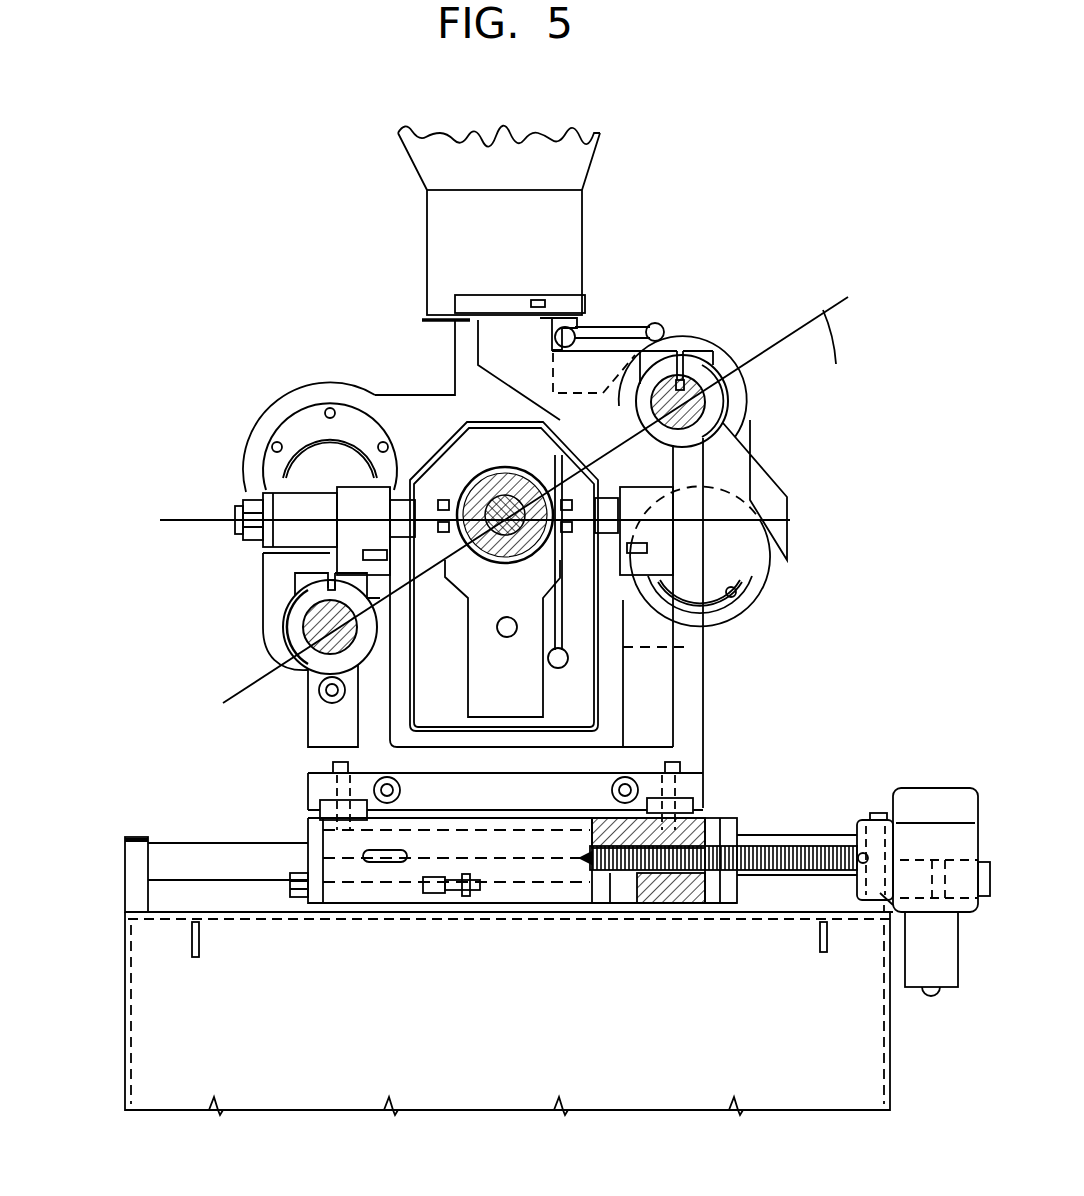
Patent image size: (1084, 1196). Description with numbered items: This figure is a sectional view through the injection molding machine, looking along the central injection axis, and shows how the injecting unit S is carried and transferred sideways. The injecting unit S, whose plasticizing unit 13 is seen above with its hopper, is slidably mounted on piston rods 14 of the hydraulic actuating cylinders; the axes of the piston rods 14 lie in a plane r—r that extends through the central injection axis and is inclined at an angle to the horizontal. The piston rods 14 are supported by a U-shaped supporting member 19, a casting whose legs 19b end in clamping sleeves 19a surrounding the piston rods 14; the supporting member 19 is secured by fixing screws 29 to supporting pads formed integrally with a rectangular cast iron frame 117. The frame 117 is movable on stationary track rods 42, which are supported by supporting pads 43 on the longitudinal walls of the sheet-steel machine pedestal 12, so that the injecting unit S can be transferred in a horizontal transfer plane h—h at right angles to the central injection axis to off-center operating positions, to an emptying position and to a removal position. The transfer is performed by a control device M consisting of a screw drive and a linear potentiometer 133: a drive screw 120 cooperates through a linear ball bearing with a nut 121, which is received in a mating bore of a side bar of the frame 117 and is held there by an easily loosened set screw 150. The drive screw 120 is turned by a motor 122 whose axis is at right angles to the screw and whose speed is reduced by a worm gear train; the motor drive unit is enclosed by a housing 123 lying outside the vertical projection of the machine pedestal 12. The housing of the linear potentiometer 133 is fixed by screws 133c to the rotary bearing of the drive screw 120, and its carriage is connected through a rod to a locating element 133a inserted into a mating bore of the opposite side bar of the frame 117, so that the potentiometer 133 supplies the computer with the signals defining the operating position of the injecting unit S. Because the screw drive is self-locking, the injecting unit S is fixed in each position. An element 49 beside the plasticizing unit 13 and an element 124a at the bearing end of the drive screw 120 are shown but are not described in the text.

The machine pedestal 12 is at (125, 1040).
The plasticizing unit 13 is at (436, 440).
The piston rods 14 is at (305, 607).
The U-shaped supporting member 19 is at (707, 657).
The clamping sleeves 19a is at (302, 626).
The legs 19b is at (368, 687).
The fixing screws 29 is at (333, 762).
The track rods 42 is at (243, 852).
The supporting pads 43 is at (137, 897).
The hopper bracket with rod 49 is at (472, 390).
The cast iron frame 117 is at (385, 918).
The drive screw 120 is at (792, 874).
The nut 121 is at (633, 886).
The motor 122 is at (931, 963).
The housing 123 is at (940, 807).
The screw bearing bracket 124a is at (877, 813).
The linear potentiometer 133 is at (547, 885).
The locating element 133a is at (410, 886).
The screws 133c is at (882, 908).
The set screw 150 is at (702, 812).
The injecting unit S is at (330, 385).
The transfer plane h is at (471, 531).
The plane of the piston rod axes r is at (530, 502).
The control device M is at (818, 800).